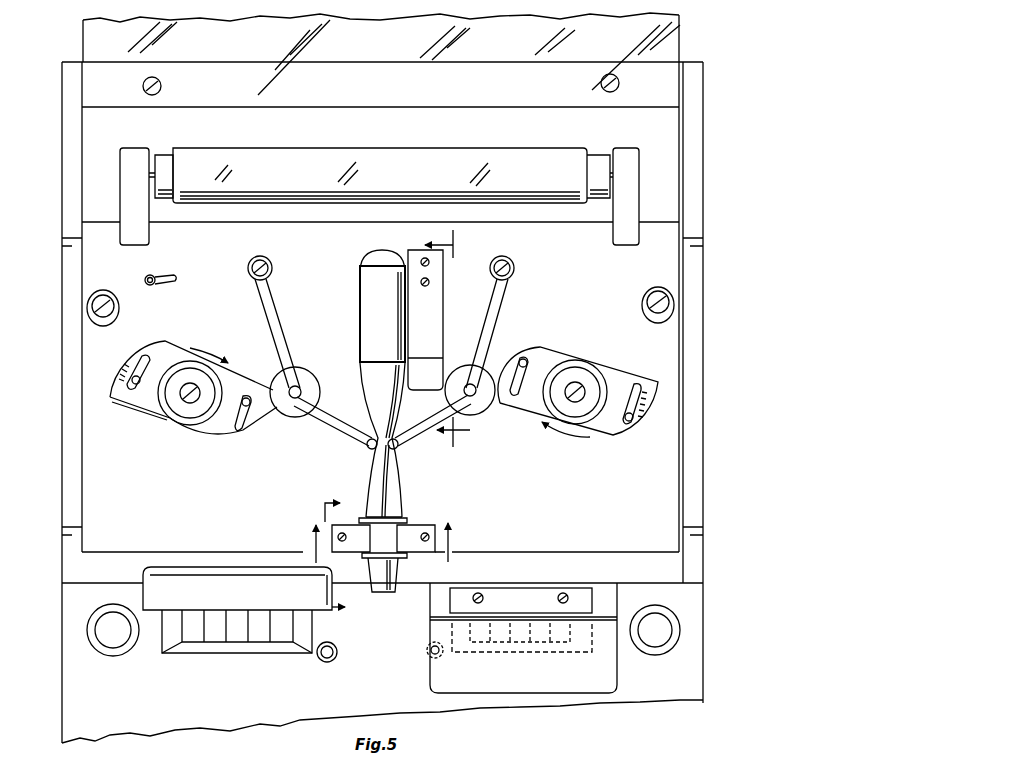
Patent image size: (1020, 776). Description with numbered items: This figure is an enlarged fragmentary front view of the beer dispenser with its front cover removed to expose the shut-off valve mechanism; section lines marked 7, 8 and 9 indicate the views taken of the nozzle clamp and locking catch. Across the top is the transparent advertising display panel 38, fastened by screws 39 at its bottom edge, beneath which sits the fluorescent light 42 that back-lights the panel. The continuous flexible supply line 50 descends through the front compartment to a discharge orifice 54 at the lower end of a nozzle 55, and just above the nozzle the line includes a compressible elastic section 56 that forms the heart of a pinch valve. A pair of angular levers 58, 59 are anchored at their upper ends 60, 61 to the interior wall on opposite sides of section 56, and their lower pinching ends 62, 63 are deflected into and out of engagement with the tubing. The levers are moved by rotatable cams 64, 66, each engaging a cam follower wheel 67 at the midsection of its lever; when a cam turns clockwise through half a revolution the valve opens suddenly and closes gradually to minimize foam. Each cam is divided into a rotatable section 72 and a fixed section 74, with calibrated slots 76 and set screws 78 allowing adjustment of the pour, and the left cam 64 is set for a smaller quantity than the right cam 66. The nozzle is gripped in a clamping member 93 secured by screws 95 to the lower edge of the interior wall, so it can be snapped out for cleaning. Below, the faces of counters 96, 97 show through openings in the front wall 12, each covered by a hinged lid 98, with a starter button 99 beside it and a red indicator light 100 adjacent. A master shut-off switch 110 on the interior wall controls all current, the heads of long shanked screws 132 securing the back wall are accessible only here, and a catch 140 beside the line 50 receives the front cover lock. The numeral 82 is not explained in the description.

The front wall 12 is at (73, 702).
The advertising display panel 38 is at (665, 35).
The screws 39 is at (161, 86).
The fluorescent light 42 is at (553, 156).
The flexible supply line 50 is at (360, 378).
The discharge orifice 54 is at (386, 594).
The nozzle 55 is at (402, 567).
The compressible elastic line section 56 is at (368, 478).
The angular lever 58 is at (283, 306).
The angular lever 59 is at (492, 310).
The upper end of lever 60 is at (268, 262).
The upper end of lever 61 is at (496, 258).
The pinching end of lever 62 is at (366, 448).
The pinching end of lever 63 is at (400, 448).
The rotatable cam 64 is at (170, 345).
The rotatable cam 66 is at (562, 347).
The cam follower wheel 67 is at (485, 372).
The rotatable cam section 72 is at (212, 438).
The fixed cam section 74 is at (118, 405).
The calibrated slots 76 is at (132, 350).
The set screws 78 is at (142, 375).
The tube label 82 is at (358, 290).
The clamping member 93 is at (412, 522).
The screws 95 is at (342, 543).
The counter 96 is at (222, 642).
The counter 97 is at (592, 652).
The lid 98 is at (150, 580).
The starter button 99 is at (322, 662).
The red indicator light 100 is at (100, 623).
The master shut-off switch 110 is at (160, 279).
The long shanked screws 132 is at (114, 306).
The catch 140 is at (440, 366).
The section line 7- 7 is at (377, 535).
The section line 8- 8 is at (342, 557).
The section line 9- 9 is at (447, 338).